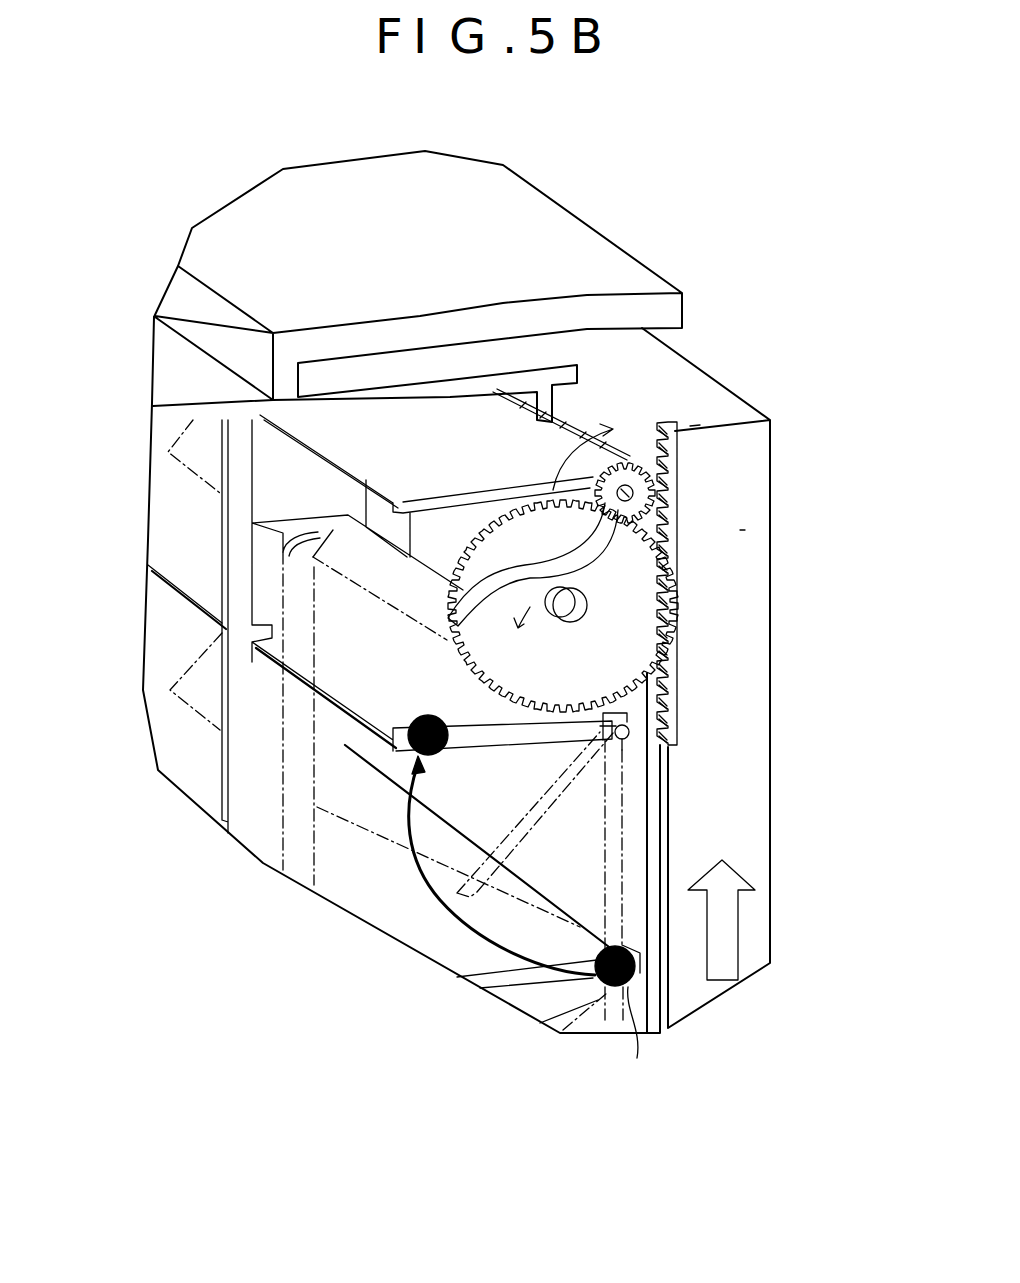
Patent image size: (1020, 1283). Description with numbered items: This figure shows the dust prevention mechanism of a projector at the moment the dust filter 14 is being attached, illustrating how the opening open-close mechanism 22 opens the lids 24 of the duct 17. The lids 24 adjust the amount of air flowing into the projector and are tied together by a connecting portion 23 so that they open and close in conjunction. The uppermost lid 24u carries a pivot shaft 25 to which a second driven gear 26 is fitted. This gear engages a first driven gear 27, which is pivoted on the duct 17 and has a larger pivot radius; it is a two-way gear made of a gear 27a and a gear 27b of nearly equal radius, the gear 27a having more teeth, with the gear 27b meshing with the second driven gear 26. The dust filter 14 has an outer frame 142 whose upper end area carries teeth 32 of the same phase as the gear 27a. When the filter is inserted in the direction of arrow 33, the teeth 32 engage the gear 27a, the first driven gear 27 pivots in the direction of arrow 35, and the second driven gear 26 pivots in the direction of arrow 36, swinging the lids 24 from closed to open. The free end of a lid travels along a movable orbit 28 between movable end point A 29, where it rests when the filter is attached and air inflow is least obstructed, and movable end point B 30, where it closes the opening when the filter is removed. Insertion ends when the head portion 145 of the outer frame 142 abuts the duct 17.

The dust filter 14 is at (773, 895).
The duct 17 is at (485, 198).
The opening open-close mechanism 22 is at (252, 878).
The connecting portion 23 is at (240, 590).
The lid 24 is at (395, 748).
The uppermost lid 24u is at (427, 447).
The pivot shaft 25 is at (625, 490).
The second driven gear 26 is at (645, 470).
The first driven gear 27 is at (677, 606).
The gear 27a is at (613, 632).
The gear 27b is at (543, 538).
The movable orbit 28 is at (433, 905).
The movable end point A 29 is at (420, 760).
The movable end point B 30 is at (600, 1000).
The teeth 32 is at (677, 453).
The arrow 33 is at (723, 957).
The arrow 35 is at (627, 690).
The arrow 36 is at (593, 418).
The outer frame 142 is at (700, 533).
The head portion 145 is at (703, 403).